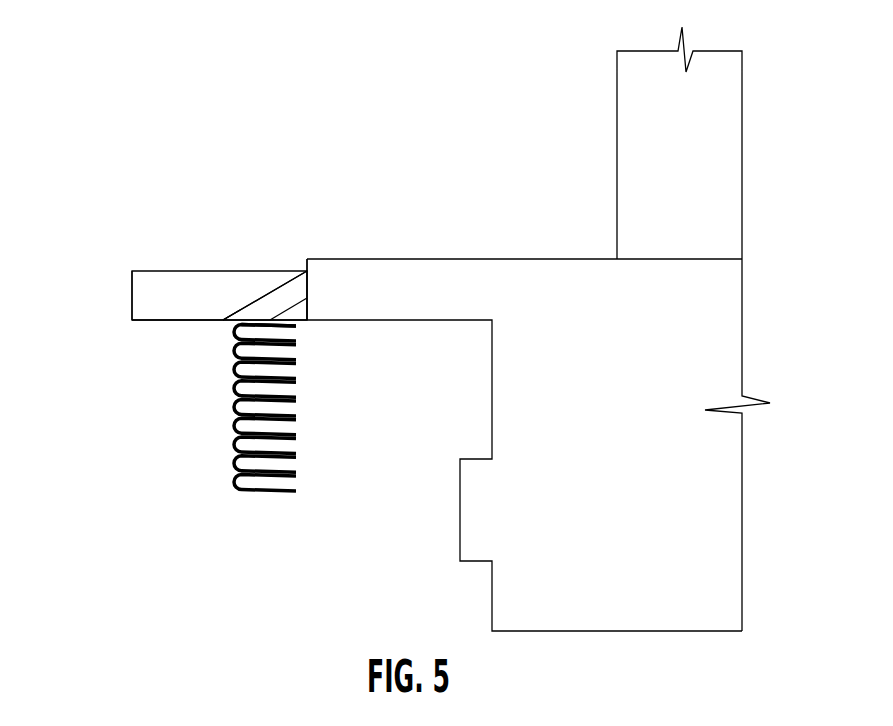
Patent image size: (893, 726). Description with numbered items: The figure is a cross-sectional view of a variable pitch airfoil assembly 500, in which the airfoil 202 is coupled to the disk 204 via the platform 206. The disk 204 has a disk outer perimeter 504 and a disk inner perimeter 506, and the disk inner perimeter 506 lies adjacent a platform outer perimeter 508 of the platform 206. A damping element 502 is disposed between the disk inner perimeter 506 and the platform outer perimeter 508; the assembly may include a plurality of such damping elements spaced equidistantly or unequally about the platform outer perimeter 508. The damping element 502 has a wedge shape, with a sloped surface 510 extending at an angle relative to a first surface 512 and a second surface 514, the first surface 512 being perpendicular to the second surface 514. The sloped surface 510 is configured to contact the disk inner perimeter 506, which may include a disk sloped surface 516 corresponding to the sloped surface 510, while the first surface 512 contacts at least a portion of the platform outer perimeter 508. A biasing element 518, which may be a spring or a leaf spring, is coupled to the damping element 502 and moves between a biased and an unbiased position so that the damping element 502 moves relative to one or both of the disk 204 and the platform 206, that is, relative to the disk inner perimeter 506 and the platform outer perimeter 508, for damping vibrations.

The variable pitch airfoil assembly 500 is at (195, 103).
The airfoil 202 is at (718, 110).
The disk 204 is at (149, 293).
The platform 206 is at (370, 275).
The damping element 502 is at (293, 302).
The disk outer perimeter 504 is at (132, 286).
The disk inner perimeter 506 is at (258, 298).
The platform outer perimeter 508 is at (306, 271).
The sloped surface 510 is at (237, 322).
The first surface 512 is at (307, 295).
The second surface 514 is at (272, 322).
The disk sloped surface 516 is at (261, 263).
The biasing element 518 is at (235, 433).